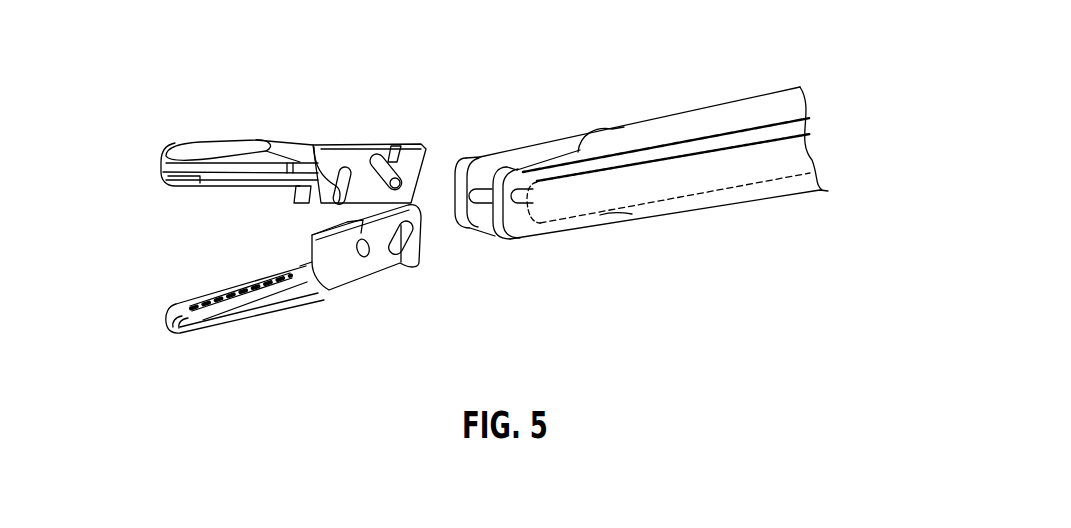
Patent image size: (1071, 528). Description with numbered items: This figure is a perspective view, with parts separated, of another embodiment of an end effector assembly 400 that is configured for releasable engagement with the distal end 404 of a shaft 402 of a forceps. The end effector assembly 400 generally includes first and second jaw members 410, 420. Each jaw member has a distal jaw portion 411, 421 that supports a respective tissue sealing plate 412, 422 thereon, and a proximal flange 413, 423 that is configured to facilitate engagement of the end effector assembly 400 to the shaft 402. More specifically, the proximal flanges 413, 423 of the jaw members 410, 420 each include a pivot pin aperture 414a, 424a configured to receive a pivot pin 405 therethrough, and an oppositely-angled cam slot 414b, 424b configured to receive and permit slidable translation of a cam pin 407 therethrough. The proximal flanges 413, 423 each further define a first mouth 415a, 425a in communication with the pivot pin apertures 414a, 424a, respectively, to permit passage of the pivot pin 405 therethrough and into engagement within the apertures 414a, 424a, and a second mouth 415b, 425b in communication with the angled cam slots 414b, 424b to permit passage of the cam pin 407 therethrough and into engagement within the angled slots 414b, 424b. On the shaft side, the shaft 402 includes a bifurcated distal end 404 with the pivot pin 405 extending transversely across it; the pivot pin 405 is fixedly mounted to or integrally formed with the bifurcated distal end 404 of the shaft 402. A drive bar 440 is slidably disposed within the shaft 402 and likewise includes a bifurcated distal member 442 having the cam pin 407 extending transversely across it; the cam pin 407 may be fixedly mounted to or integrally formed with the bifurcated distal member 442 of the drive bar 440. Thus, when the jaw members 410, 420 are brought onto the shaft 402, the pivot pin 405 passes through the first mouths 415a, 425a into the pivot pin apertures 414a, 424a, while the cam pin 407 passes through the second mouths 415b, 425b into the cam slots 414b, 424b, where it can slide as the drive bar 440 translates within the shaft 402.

The end effector assembly 400 is at (145, 247).
The shaft 402 is at (692, 240).
The bifurcated distal end 404 is at (582, 230).
The pivot pin 405 is at (482, 195).
The cam pin 407 is at (522, 192).
The first jaw member 410 is at (165, 140).
The distal jaw portion 411 is at (212, 146).
The tissue sealing plate 412 is at (188, 180).
The proximal flange 413 is at (337, 166).
The pivot pin aperture 414a is at (346, 168).
The cam slot 414b is at (399, 182).
The first mouth 415a is at (318, 160).
The second mouth 415b is at (396, 150).
The second jaw member 420 is at (186, 354).
The distal jaw portion 421 is at (223, 328).
The tissue sealing plate 422 is at (197, 302).
The proximal flange 423 is at (334, 284).
The pivot pin aperture 424a is at (358, 256).
The cam slot 424b is at (418, 237).
The first mouth 425a is at (352, 233).
The second mouth 425b is at (407, 264).
The drive bar 440 is at (763, 173).
The bifurcated distal member 442 is at (640, 182).